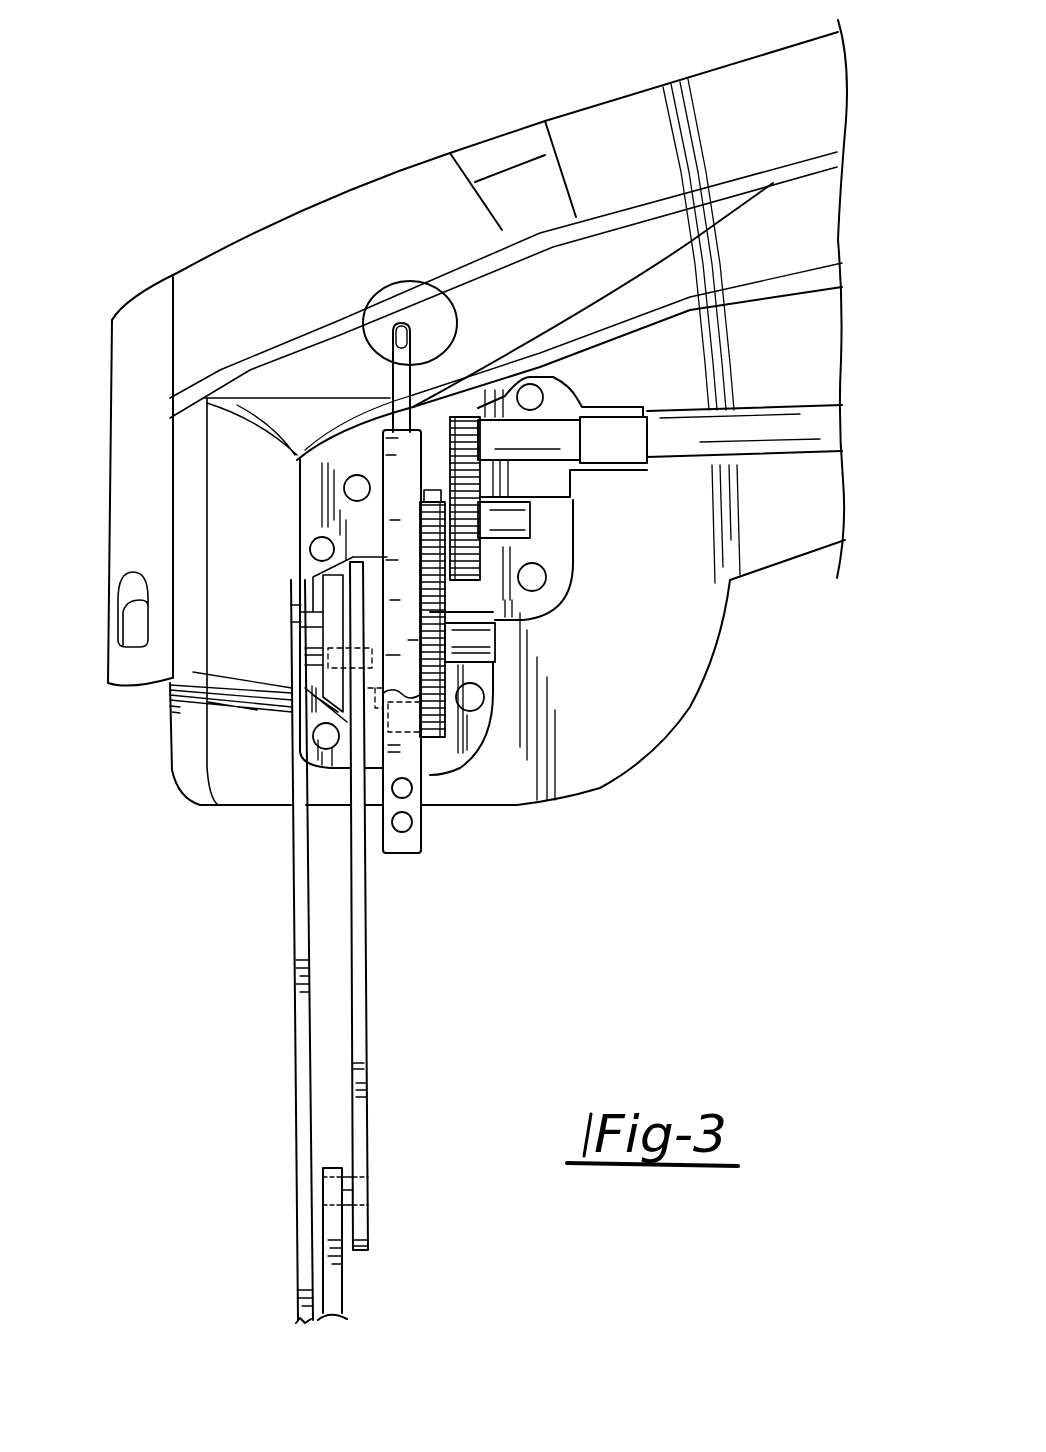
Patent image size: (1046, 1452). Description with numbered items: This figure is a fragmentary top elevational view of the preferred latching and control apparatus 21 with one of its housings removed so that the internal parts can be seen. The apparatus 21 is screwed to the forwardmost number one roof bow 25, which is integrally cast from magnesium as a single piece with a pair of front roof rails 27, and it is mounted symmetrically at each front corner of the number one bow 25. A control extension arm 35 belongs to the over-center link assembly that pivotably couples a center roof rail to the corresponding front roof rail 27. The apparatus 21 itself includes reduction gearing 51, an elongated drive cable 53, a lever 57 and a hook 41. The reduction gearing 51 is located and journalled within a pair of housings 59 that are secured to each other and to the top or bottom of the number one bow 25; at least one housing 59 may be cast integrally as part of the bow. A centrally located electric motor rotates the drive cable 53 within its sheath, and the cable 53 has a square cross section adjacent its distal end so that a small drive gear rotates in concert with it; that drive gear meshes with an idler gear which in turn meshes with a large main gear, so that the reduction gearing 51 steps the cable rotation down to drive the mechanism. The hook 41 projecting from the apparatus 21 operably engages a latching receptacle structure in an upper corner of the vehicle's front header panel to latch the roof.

The latching and control apparatus 21 is at (659, 754).
The number one roof bow 25 is at (743, 78).
The front roof rail 27 is at (298, 905).
The control extension arm 35 is at (337, 1287).
The hook 41 is at (397, 450).
The reduction gearing 51 is at (480, 760).
The drive cable 53 is at (806, 430).
The lever 57 is at (357, 958).
The housing 59 is at (313, 497).